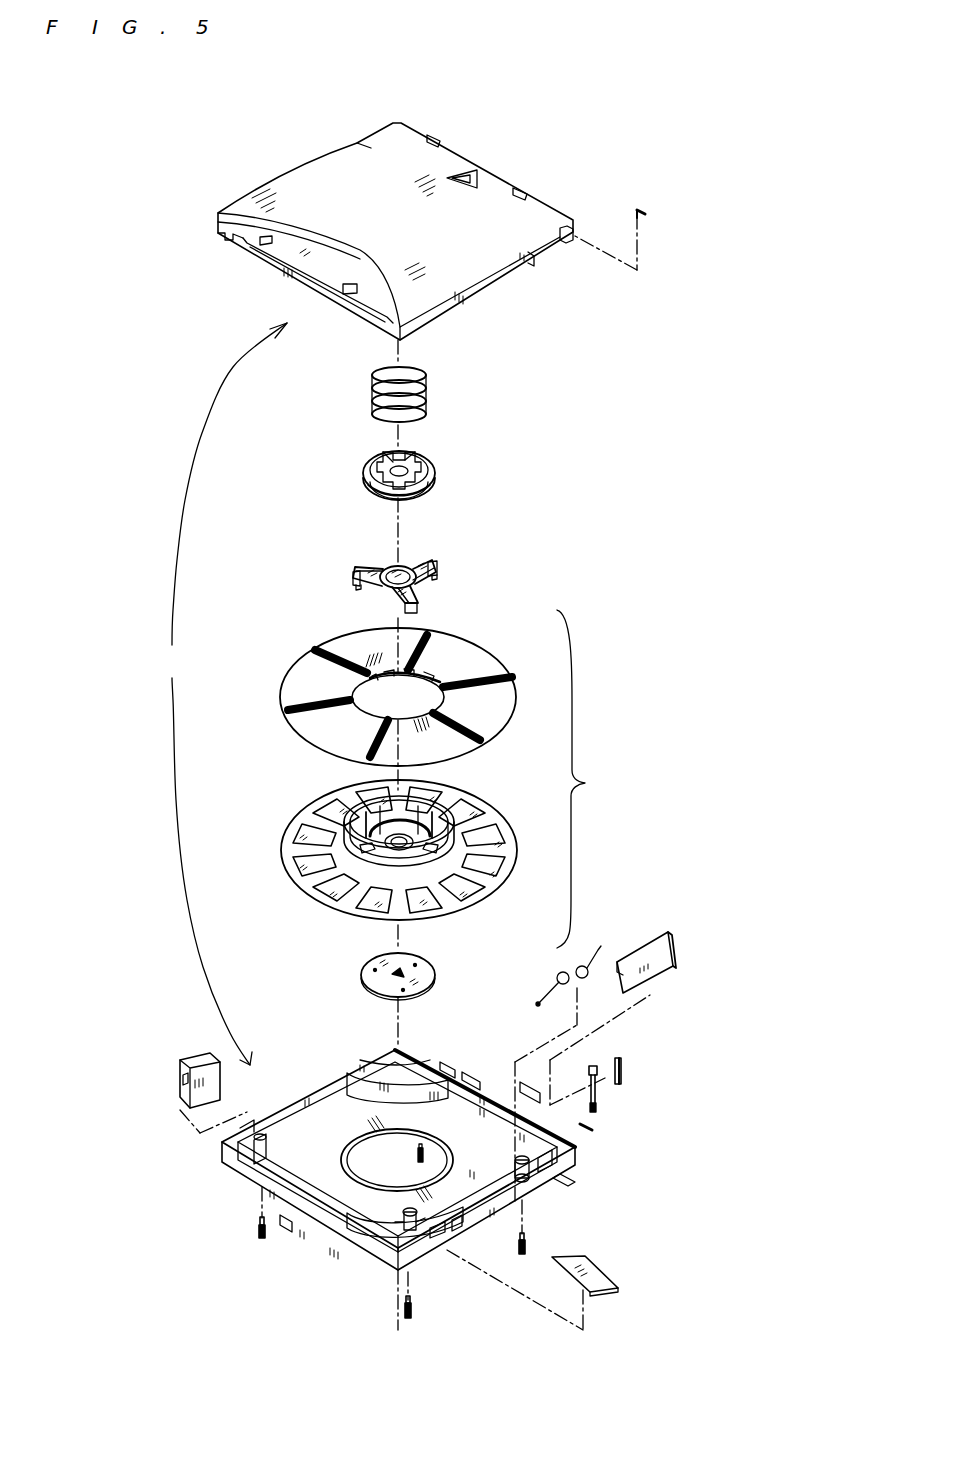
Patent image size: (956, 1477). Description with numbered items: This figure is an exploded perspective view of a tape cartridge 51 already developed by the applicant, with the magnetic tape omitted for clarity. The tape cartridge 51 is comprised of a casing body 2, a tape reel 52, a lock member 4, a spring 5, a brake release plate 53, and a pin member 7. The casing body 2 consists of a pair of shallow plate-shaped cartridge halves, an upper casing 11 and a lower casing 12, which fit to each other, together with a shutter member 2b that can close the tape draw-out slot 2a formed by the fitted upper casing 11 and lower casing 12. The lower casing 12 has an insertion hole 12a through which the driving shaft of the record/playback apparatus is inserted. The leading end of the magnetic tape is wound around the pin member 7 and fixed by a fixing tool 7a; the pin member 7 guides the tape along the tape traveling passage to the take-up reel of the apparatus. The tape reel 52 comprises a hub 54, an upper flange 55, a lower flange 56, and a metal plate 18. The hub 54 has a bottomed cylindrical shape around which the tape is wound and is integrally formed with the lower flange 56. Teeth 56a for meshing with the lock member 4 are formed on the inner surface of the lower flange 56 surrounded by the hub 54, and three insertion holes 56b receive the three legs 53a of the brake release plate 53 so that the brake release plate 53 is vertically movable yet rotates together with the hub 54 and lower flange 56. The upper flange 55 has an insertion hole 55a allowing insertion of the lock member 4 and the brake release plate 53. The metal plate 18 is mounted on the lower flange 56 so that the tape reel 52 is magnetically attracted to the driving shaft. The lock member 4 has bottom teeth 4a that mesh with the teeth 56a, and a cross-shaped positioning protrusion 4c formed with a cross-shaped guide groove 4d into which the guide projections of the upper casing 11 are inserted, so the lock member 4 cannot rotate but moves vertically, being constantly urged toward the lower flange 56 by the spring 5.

The casing body 2 is at (226, 694).
The tape draw-out slot 2a is at (548, 250).
The shutter member 2b is at (675, 971).
The lock member 4 is at (419, 474).
The teeth 4a is at (379, 494).
The positioning protrusion 4c is at (384, 456).
The guide groove 4d is at (411, 453).
The spring 5 is at (427, 391).
The pin member 7 is at (597, 1091).
The fixing tool 7a is at (623, 1071).
The upper casing 11 is at (493, 183).
The lower casing 12 is at (398, 1149).
The insertion hole 12a is at (381, 1153).
The metal plate 18 is at (431, 973).
The tape cartridge 51 is at (259, 137).
The tape reel 52 is at (589, 779).
The brake release plate 53 is at (385, 572).
The legs 53a is at (355, 583).
The hub 54 is at (431, 863).
The upper flange 55 is at (413, 683).
The insertion hole 55a is at (389, 691).
The lower flange 56 is at (420, 843).
The teeth 56a is at (375, 819).
The insertion holes 56b is at (441, 823).